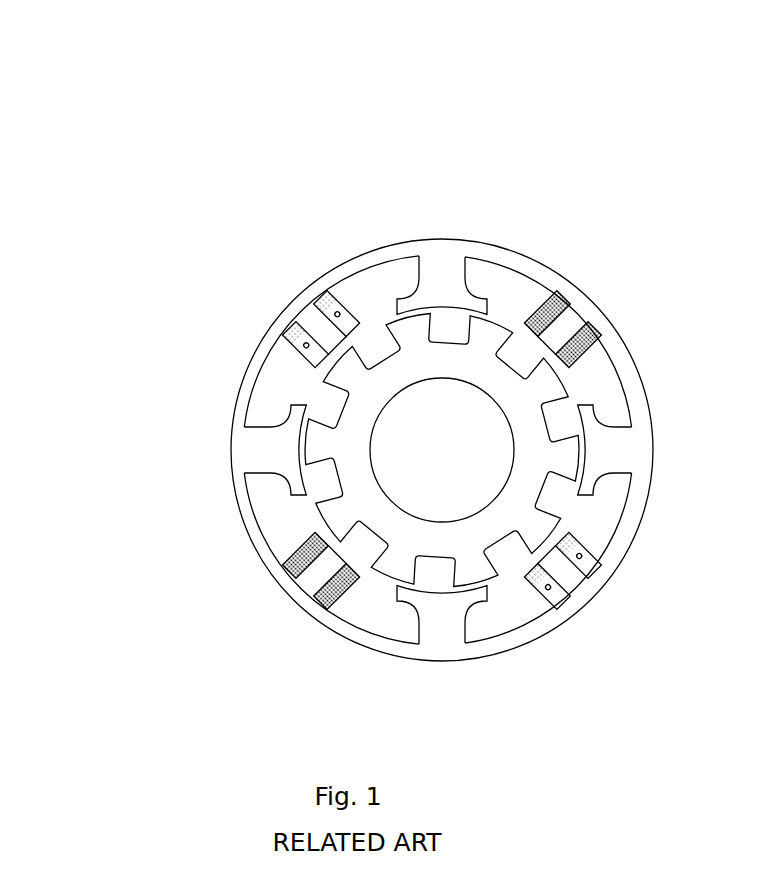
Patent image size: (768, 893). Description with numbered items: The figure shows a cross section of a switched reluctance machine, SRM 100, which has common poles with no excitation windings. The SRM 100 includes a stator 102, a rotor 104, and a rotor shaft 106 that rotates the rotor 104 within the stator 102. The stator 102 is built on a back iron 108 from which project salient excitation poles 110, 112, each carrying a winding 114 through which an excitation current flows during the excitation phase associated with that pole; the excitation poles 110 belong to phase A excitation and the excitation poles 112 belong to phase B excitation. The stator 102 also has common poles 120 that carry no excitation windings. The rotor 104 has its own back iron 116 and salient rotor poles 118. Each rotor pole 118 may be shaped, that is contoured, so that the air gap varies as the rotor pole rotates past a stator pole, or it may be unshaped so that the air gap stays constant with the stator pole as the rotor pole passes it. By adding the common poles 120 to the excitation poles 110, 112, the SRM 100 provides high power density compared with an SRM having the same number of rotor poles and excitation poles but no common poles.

The switched reluctance machine 100 is at (142, 118).
The stator 102 is at (642, 351).
The rotor 104 is at (500, 405).
The rotor shaft 106 is at (457, 477).
The back iron 108 is at (361, 268).
The excitation pole 110 is at (570, 327).
The excitation pole 112 is at (308, 314).
The winding 114 is at (546, 295).
The back iron 116 is at (370, 500).
The rotor pole 118 is at (345, 378).
The common pole 120 is at (446, 278).